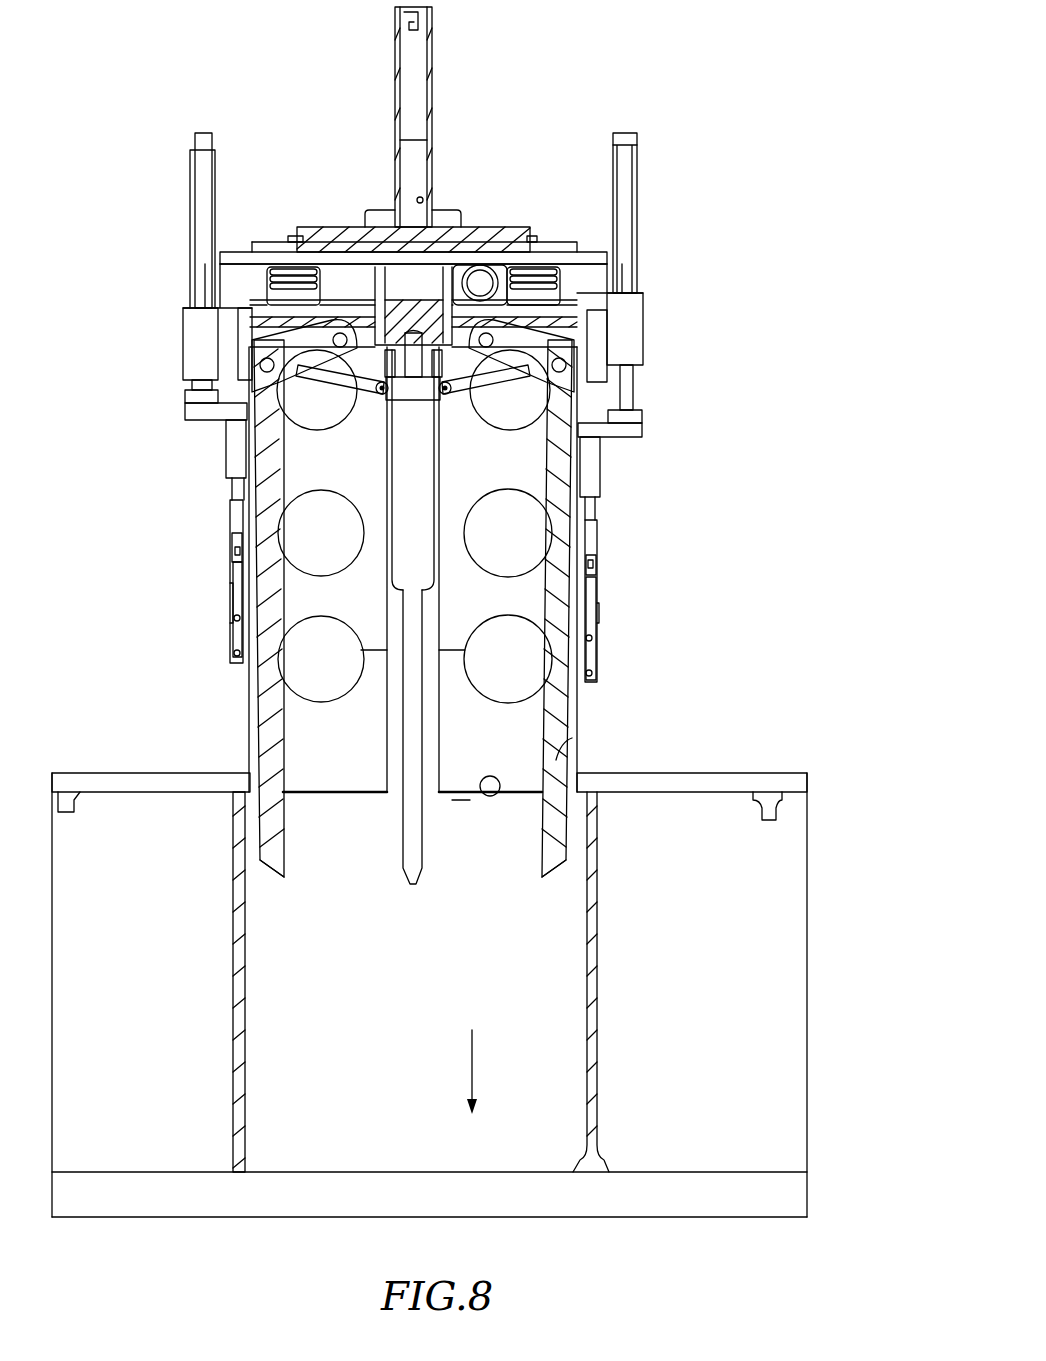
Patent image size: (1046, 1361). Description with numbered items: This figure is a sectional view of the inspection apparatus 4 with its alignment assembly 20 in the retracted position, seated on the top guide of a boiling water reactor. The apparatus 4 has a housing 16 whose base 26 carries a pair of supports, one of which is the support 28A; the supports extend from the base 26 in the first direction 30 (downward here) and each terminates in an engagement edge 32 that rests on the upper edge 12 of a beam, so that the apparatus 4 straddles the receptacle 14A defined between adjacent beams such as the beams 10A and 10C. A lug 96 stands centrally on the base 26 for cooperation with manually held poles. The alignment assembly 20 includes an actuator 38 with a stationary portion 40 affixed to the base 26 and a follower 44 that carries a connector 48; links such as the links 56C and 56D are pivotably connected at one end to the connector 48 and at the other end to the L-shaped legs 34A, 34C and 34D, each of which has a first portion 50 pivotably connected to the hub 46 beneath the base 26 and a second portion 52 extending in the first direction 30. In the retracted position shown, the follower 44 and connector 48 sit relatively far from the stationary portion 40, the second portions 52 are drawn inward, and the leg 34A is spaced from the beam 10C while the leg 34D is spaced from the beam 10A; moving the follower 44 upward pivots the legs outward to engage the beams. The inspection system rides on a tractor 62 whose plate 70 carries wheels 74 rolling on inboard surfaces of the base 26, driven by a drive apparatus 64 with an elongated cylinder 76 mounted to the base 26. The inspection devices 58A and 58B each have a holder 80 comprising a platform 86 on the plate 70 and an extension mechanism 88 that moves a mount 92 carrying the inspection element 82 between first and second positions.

The apparatus 4 is at (489, 161).
The beam 10A is at (247, 964).
The beam 10C is at (664, 790).
The upper edge 12 is at (500, 792).
The receptacle 14A is at (305, 1118).
The housing 16 is at (506, 226).
The alignment assembly 20 is at (647, 300).
The base 26 is at (370, 214).
The support 28A is at (556, 742).
The first direction 30 is at (472, 1030).
The engagement edge 32 is at (454, 800).
The leg 34A is at (422, 878).
The leg 34C is at (545, 862).
The leg 34D is at (284, 860).
The actuator 38 is at (372, 268).
The stationary portion 40 is at (378, 292).
The follower 44 is at (382, 378).
The hub 46 is at (437, 400).
The connector 48 is at (392, 400).
The first portion 50 is at (300, 330).
The second portion 52 is at (412, 707).
The link 56C is at (476, 400).
The link 56D is at (308, 392).
The inspection device 58A is at (183, 333).
The inspection device 58B is at (645, 340).
The tractor 62 is at (557, 246).
The drive apparatus 64 is at (432, 225).
The plate 70 is at (576, 252).
The wheels 74 is at (286, 267).
The cylinder 76 is at (470, 265).
The holder 80 is at (184, 405).
The inspection element 82 is at (240, 660).
The platform 86 is at (222, 268).
The extension mechanism 88 is at (195, 165).
The mount 92 is at (226, 445).
The lug 96 is at (433, 62).